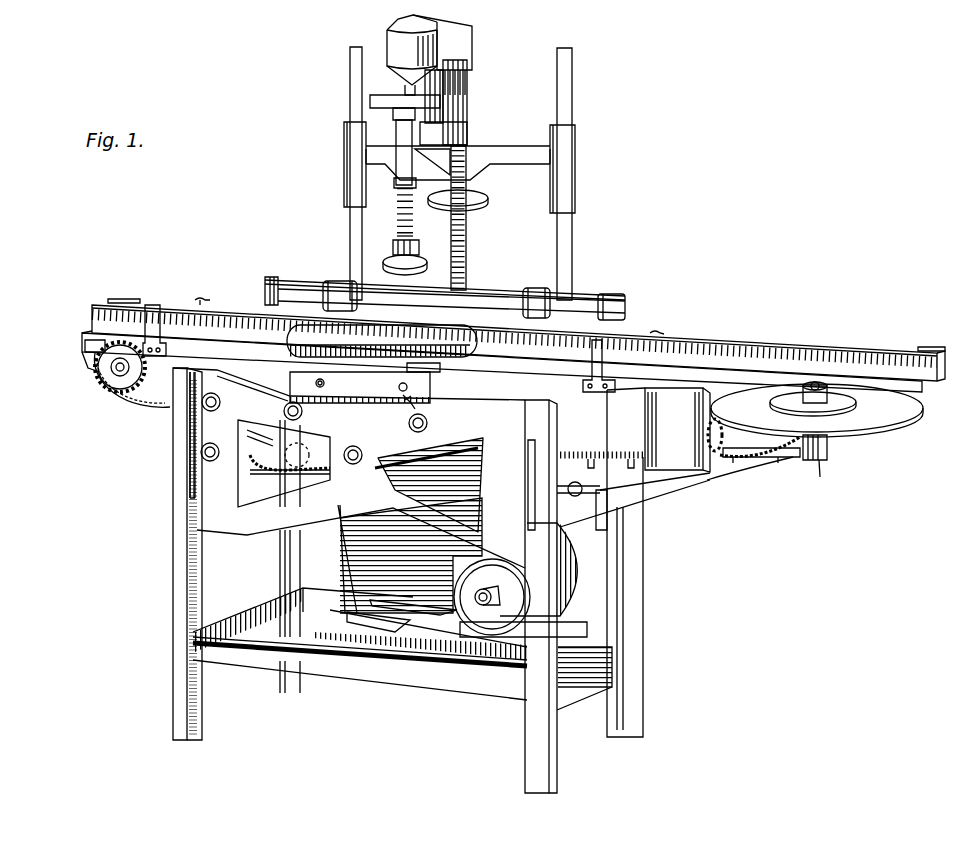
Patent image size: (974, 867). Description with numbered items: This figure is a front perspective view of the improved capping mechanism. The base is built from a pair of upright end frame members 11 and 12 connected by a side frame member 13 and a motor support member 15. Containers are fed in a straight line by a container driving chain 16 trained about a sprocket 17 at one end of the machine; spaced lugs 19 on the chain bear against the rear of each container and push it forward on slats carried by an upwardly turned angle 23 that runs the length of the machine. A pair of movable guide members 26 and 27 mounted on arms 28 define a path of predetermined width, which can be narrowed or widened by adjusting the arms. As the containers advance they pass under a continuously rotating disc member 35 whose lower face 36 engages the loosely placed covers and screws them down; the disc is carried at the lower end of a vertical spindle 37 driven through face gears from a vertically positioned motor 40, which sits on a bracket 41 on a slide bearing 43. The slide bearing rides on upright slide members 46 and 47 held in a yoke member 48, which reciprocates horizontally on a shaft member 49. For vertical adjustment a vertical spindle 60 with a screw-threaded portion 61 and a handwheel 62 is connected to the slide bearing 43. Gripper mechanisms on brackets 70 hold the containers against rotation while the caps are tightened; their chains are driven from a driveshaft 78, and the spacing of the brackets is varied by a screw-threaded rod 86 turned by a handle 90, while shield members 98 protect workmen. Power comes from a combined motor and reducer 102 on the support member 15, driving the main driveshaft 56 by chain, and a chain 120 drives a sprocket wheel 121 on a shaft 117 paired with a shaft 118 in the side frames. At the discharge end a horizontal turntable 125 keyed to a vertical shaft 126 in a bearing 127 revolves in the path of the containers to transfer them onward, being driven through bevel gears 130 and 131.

The upright end frame member 11 is at (172, 690).
The upright end frame member 12 is at (550, 760).
The side frame member 13 is at (228, 527).
The motor support member 15 is at (365, 657).
The container driving chain 16 is at (755, 460).
The sprocket 17 is at (118, 382).
The spaced lug 19 is at (610, 467).
The upwardly turned angle 23 is at (93, 345).
The movable guide member 26 is at (120, 298).
The movable guide member 27 is at (95, 318).
The arm 28 is at (213, 303).
The disc member 35 is at (420, 249).
The lower face 36 is at (383, 265).
The vertical spindle 37 is at (425, 222).
The motor 40 is at (447, 50).
The bracket 41 is at (455, 62).
The slide bearing 43 is at (540, 162).
The upright slide member 46 is at (352, 68).
The upright slide member 47 is at (567, 88).
The yoke member 48 is at (303, 293).
The shaft member 49 is at (592, 293).
The main driveshaft 56 is at (350, 448).
The vertical spindle 60 is at (470, 277).
The screw-threaded portion 61 is at (466, 238).
The handwheel 62 is at (483, 204).
The bracket 70 is at (368, 393).
The driveshaft 78 is at (428, 425).
The screw-threaded rod 86 is at (318, 384).
The handle 90 is at (410, 405).
The shield member 98 is at (433, 355).
The combined motor and reducer 102 is at (575, 568).
The shaft 117 is at (190, 466).
The shaft 118 is at (200, 405).
The chain 120 is at (300, 475).
The sprocket wheel 121 is at (263, 462).
The horizontal turntable 125 is at (870, 420).
The vertical shaft 126 is at (817, 384).
The bearing 127 is at (821, 462).
The bevel gear 130 is at (720, 457).
The bevel gear 131 is at (710, 478).